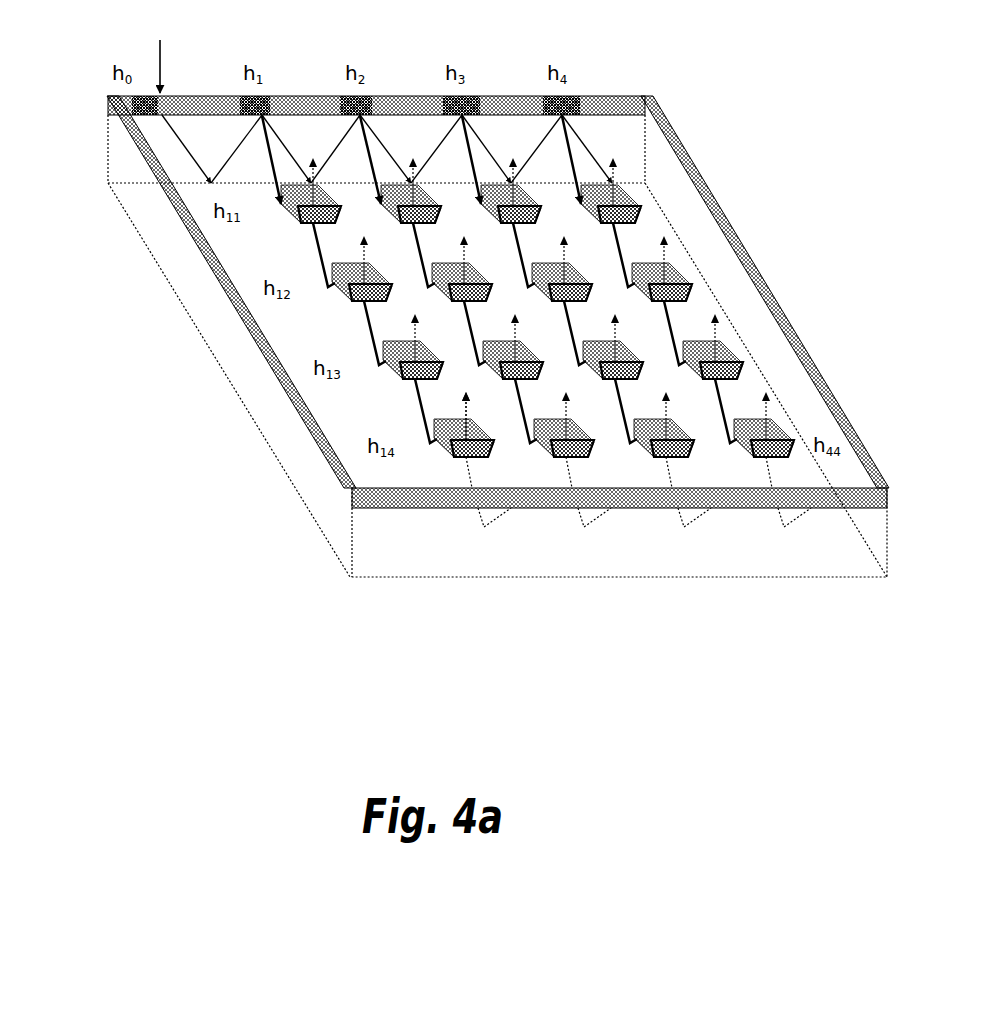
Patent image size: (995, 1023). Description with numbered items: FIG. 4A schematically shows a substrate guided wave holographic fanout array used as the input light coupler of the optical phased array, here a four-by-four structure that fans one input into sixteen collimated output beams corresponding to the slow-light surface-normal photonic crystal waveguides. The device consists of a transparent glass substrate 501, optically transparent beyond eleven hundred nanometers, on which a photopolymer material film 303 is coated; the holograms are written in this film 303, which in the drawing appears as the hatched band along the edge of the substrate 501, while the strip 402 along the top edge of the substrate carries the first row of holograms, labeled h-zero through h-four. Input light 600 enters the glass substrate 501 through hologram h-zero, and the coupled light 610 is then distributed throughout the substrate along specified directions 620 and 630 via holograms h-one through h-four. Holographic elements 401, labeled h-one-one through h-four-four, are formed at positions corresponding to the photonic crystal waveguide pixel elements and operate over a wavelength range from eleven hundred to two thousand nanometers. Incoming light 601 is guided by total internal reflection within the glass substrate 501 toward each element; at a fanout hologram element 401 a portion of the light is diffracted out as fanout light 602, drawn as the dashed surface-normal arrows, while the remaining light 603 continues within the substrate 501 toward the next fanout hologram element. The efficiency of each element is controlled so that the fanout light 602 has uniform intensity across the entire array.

The input light 600 is at (160, 45).
The specified direction 620 is at (298, 152).
The specified direction 630 is at (372, 163).
The in-coupling grating bar 402 is at (462, 100).
The holographic elements 401 is at (670, 270).
The coupled light 610 is at (185, 157).
The glass substrate 501 is at (160, 228).
The photopolymer material film 303 is at (246, 323).
The incoming light 601 is at (437, 443).
The remaining light 603 is at (470, 466).
The fanout light 602 is at (472, 392).